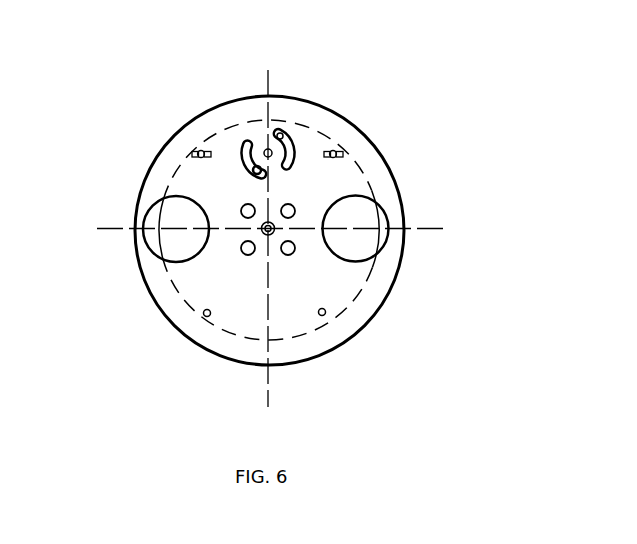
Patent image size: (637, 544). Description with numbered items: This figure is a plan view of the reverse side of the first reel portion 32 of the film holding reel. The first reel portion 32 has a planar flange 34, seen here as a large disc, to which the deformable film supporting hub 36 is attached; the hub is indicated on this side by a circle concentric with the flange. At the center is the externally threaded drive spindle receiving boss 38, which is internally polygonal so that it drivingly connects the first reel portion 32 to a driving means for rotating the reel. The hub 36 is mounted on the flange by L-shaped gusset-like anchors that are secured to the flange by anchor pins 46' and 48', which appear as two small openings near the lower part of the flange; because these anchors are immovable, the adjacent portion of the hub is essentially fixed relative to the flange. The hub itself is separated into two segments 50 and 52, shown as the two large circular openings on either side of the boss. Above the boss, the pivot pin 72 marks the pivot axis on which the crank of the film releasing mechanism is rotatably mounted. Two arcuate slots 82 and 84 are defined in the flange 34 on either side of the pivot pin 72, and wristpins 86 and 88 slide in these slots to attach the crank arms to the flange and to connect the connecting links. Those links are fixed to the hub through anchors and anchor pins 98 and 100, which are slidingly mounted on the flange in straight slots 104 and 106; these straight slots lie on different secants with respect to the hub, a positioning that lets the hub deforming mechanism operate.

The first reel portion 32 is at (286, 260).
The planar flange 34 is at (368, 137).
The deformable film supporting hub 36 is at (380, 184).
The drive spindle receiving boss 38 is at (268, 234).
The anchor pin 46' is at (158, 349).
The anchor pin 48' is at (401, 315).
The hub segment 50 is at (160, 246).
The hub segment 52 is at (382, 234).
The pivot pin 72 is at (266, 148).
The arcuate slot 82 is at (172, 182).
The arcuate slot 84 is at (297, 150).
The wristpin 86 is at (253, 171).
The wristpin 88 is at (333, 100).
The anchor pin 98 is at (200, 148).
The anchor pin 100 is at (346, 149).
The straight slot 104 is at (145, 103).
The straight slot 106 is at (394, 118).